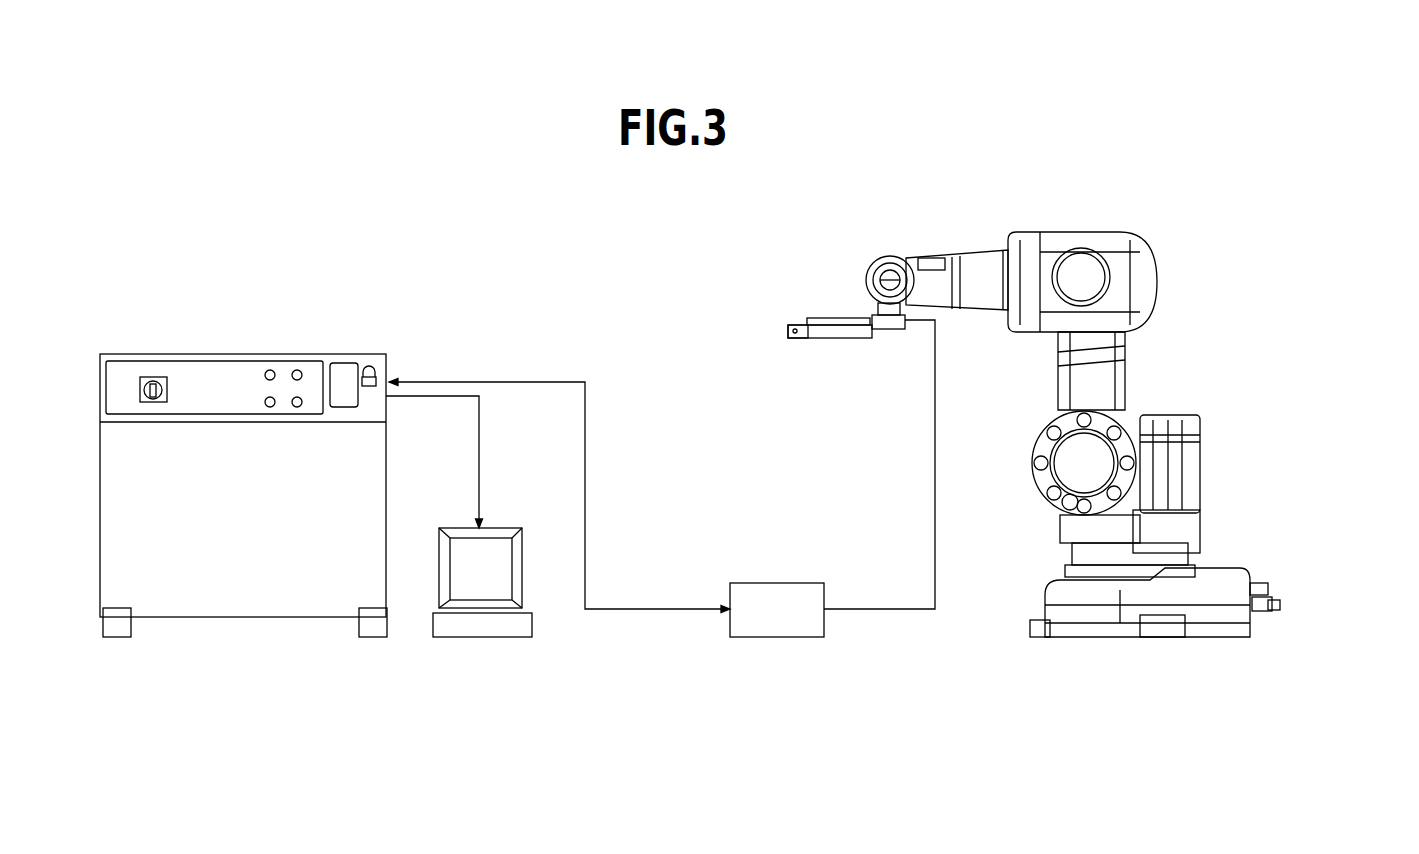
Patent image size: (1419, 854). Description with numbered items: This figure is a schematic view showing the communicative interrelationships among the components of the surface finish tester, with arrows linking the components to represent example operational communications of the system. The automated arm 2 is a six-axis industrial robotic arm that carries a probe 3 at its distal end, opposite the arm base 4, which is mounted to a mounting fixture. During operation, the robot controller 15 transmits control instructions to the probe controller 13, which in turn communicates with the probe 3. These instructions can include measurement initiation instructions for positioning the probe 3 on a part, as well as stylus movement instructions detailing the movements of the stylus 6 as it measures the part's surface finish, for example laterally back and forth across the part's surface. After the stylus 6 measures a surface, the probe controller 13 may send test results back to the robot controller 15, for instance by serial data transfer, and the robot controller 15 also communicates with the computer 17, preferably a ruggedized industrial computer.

The automated arm 2 is at (1064, 238).
The probe 3 is at (782, 288).
The arm base 4 is at (1215, 568).
The stylus 6 is at (797, 338).
The probe controller 13 is at (865, 665).
The robot controller 15 is at (293, 445).
The computer 17 is at (559, 623).